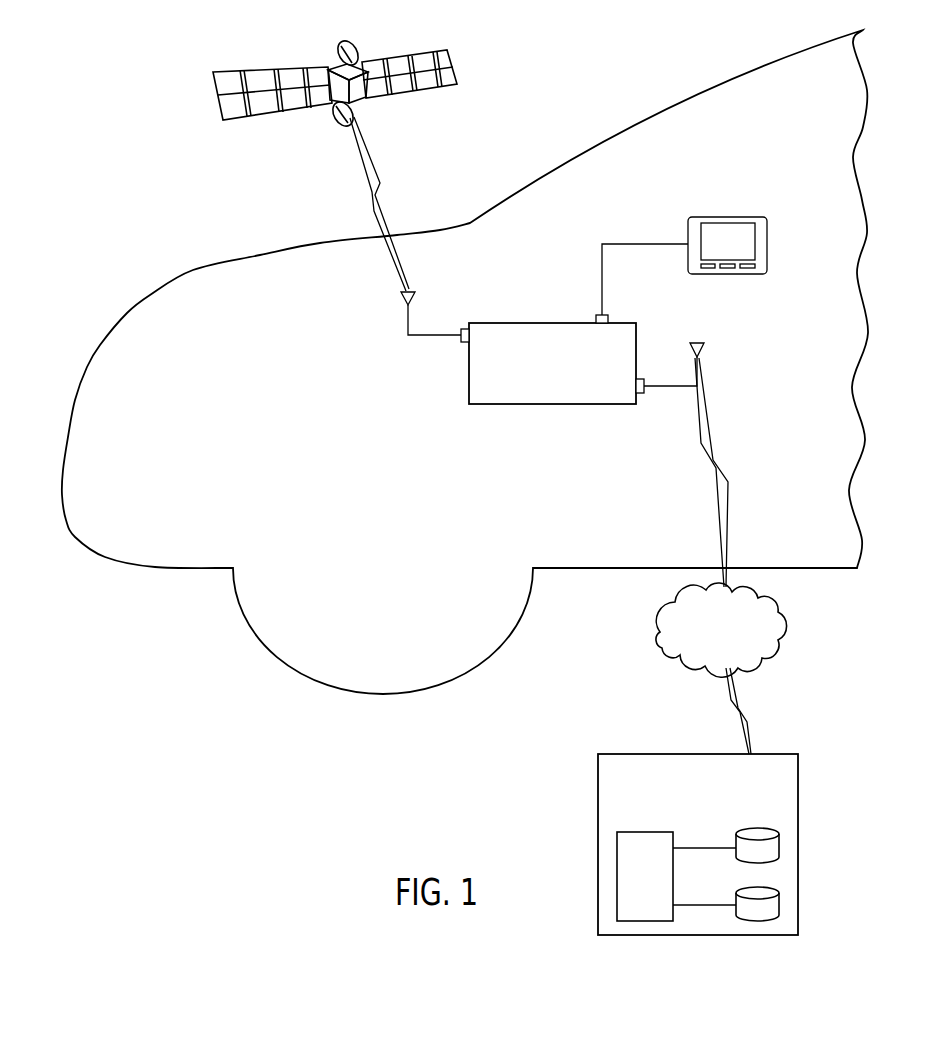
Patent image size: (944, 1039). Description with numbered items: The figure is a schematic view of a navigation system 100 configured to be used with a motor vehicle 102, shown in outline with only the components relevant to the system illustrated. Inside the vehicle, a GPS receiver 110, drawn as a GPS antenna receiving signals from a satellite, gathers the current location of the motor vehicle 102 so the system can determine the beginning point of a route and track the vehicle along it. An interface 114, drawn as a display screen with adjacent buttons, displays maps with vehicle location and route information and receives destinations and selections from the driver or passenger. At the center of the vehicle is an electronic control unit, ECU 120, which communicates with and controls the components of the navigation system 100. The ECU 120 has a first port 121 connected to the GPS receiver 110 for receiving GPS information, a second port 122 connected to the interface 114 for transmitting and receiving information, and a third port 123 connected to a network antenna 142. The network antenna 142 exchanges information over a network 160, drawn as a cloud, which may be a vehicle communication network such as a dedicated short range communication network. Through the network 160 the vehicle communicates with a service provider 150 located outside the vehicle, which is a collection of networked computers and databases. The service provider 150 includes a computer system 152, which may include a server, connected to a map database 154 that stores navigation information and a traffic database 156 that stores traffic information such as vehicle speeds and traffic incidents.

The navigation system 100 is at (622, 58).
The motor vehicle 102 is at (558, 173).
The GPS receiver 110 is at (402, 300).
The interface 114 is at (742, 217).
The electronic control unit 120 is at (469, 378).
The first port 121 is at (462, 328).
The second port 122 is at (596, 320).
The third port 123 is at (641, 393).
The network antenna 142 is at (697, 343).
The service provider 150 is at (616, 754).
The computer system 152 is at (617, 852).
The map database 154 is at (757, 922).
The traffic database 156 is at (780, 848).
The network 160 is at (662, 626).